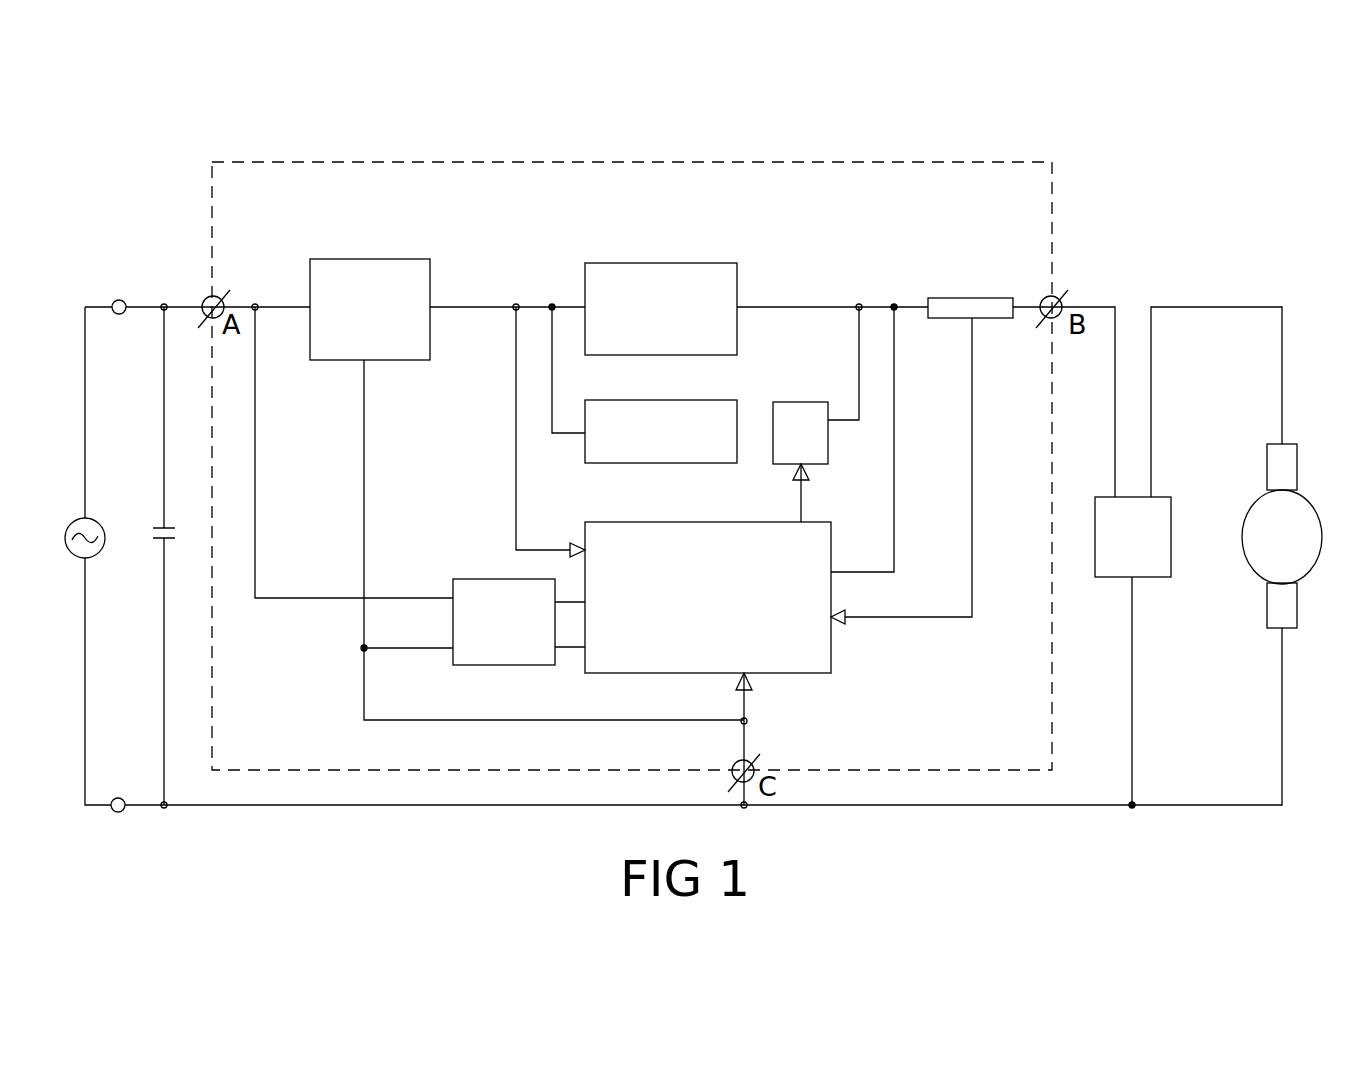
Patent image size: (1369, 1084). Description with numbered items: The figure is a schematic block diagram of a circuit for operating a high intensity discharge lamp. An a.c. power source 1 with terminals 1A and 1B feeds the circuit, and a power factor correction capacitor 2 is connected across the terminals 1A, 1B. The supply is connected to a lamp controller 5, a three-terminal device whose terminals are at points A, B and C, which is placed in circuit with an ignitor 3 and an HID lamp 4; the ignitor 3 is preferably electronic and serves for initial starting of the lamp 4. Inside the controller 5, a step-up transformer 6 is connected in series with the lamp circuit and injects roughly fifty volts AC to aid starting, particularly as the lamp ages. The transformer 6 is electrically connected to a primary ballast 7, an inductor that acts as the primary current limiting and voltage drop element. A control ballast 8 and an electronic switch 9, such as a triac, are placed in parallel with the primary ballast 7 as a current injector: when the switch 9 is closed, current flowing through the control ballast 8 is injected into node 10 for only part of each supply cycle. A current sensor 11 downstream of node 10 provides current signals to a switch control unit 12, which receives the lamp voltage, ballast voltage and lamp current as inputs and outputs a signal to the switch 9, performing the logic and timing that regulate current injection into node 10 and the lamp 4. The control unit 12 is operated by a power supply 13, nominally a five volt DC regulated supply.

The a.c. power source 1 is at (62, 538).
The terminal 1A is at (112, 318).
The terminal 1B is at (122, 797).
The power factor correction capacitor 2 is at (177, 538).
The ignitor 3 is at (1160, 516).
The HID lamp 4 is at (1305, 518).
The lamp controller 5 is at (1008, 172).
The transformer 6 is at (398, 270).
The primary ballast 7 is at (705, 275).
The control ballast 8 is at (710, 410).
The electronic switch 9 is at (805, 412).
The node 10 is at (848, 292).
The current sensor 11 is at (980, 300).
The switch control unit 12 is at (820, 663).
The power supply 13 is at (488, 597).